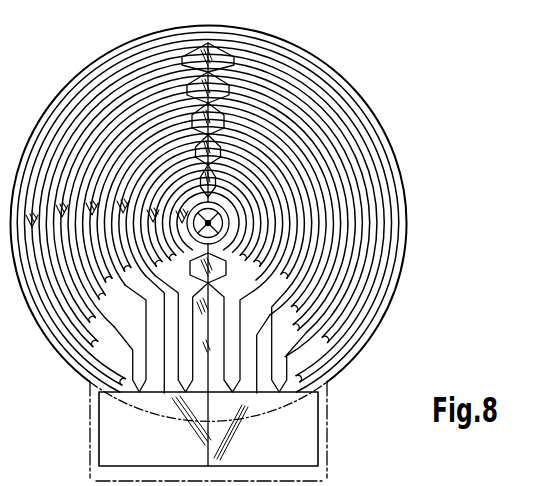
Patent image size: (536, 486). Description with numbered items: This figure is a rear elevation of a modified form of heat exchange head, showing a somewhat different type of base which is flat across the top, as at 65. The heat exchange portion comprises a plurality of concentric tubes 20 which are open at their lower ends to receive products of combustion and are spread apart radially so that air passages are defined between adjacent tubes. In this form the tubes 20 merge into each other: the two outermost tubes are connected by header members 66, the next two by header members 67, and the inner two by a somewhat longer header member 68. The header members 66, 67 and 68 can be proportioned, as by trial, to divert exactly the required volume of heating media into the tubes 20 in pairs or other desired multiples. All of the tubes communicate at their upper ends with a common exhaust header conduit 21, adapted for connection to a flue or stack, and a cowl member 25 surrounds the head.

The concentric tubes 20 is at (389, 275).
The common exhaust header conduit 21 is at (218, 62).
The cowl member 25 is at (381, 123).
The flat top of base 65 is at (172, 389).
The header members 66 is at (132, 372).
The header members 67 is at (153, 382).
The header member 68 is at (213, 392).